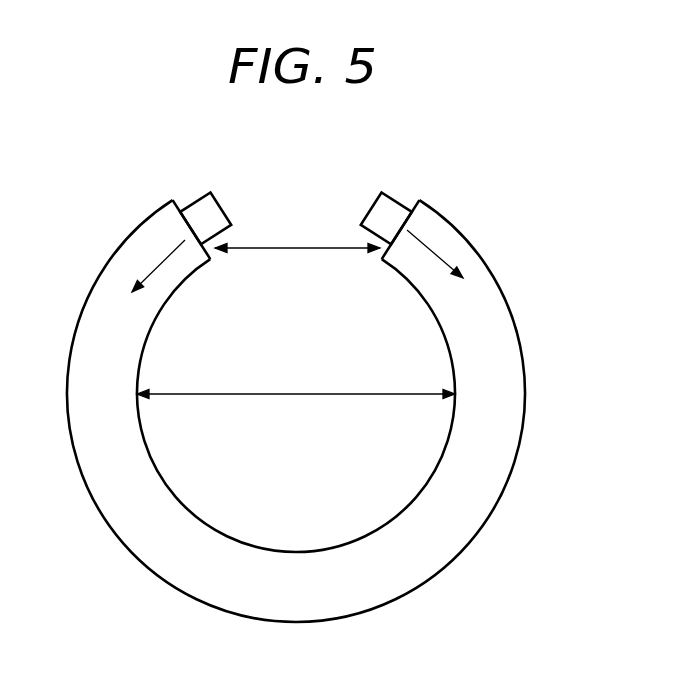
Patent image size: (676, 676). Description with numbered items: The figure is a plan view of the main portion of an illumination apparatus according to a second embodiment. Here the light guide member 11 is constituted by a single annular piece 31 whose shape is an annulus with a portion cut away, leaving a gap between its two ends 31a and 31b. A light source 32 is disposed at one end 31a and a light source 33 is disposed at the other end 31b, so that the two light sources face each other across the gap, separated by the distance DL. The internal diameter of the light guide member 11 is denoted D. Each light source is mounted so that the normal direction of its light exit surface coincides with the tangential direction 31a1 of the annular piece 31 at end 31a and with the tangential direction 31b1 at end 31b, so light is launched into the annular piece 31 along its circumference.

The light guide member 11 is at (483, 140).
The annular piece 31 is at (487, 490).
The end of the annular piece 31a is at (412, 202).
The end of the annular piece 31b is at (178, 200).
The tangential direction 31a1 is at (430, 248).
The tangential direction 31b1 is at (163, 262).
The light source 32 is at (373, 208).
The light source 33 is at (203, 198).